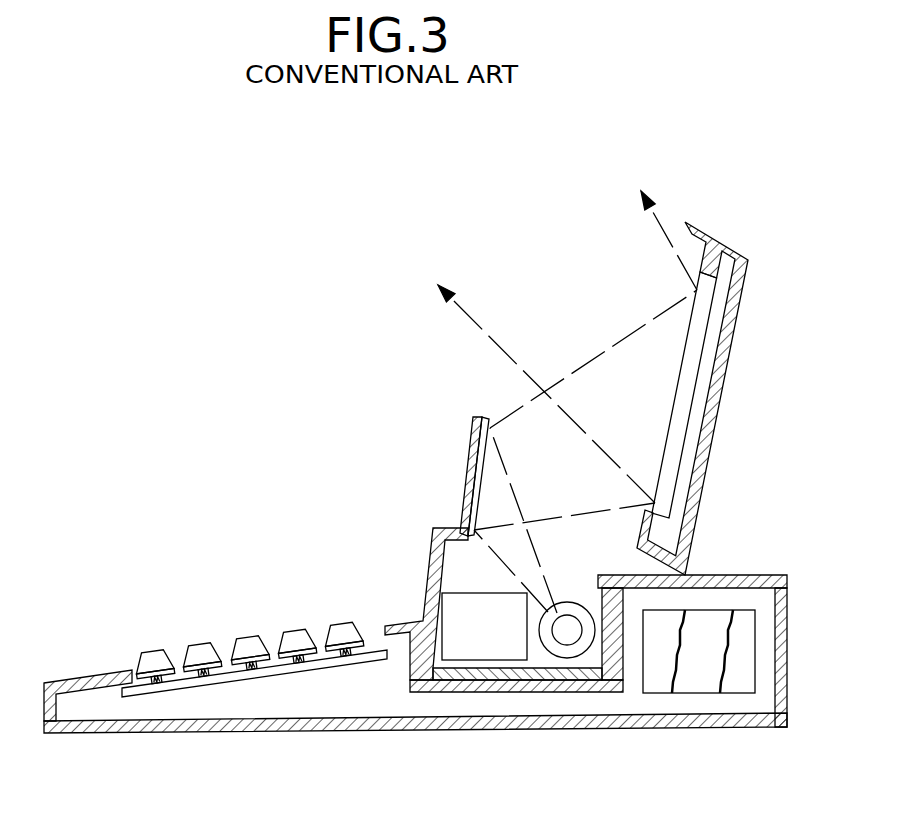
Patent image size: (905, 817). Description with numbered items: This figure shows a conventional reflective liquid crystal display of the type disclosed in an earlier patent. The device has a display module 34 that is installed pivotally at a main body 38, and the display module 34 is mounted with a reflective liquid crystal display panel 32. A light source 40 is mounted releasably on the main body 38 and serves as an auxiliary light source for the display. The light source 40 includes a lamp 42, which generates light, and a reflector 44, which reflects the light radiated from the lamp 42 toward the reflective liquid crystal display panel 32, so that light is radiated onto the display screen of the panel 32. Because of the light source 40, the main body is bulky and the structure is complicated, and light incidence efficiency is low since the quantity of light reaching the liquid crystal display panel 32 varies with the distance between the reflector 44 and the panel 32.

The reflective liquid crystal display panel 32 is at (702, 327).
The display module 34 is at (712, 442).
The main body 38 is at (787, 622).
The light source 40 is at (418, 567).
The lamp 42 is at (566, 634).
The reflector 44 is at (479, 482).